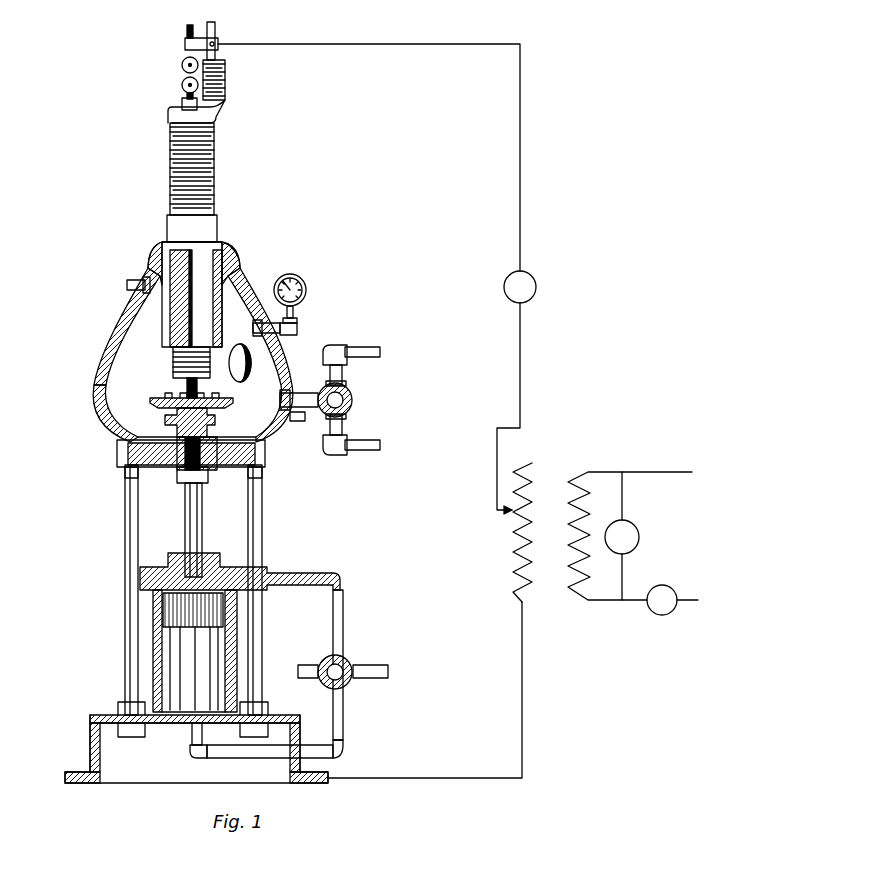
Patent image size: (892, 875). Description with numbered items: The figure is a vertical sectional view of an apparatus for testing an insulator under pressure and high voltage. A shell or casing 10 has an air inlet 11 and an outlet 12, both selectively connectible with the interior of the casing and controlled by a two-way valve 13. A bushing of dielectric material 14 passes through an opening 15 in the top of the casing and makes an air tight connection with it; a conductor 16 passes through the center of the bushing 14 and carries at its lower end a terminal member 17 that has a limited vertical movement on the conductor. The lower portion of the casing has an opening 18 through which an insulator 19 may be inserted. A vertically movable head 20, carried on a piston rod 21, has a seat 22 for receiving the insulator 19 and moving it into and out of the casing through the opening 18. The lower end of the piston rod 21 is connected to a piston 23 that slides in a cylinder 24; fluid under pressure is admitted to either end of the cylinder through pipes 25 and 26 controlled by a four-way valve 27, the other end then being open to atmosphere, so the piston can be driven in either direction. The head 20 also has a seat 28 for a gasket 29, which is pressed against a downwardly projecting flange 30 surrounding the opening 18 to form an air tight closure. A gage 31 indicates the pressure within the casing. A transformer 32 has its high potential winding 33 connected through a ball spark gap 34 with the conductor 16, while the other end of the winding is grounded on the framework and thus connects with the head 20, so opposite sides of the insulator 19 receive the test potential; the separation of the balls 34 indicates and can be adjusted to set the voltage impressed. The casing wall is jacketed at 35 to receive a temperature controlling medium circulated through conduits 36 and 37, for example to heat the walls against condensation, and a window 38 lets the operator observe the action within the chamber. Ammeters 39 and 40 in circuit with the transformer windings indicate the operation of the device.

The shell or casing 10 is at (287, 362).
The air inlet 11 is at (372, 348).
The outlet 12 is at (365, 445).
The two-way valve 13 is at (355, 395).
The bushing of dielectric material 14 is at (200, 232).
The opening 15 is at (240, 283).
The conductor 16 is at (188, 383).
The terminal member 17 is at (188, 393).
The opening 18 is at (96, 418).
The insulator 19 is at (185, 403).
The vertically movable head 20 is at (170, 465).
The piston rod 21 is at (200, 527).
The seat 22 is at (233, 423).
The piston 23 is at (193, 610).
The cylinder 24 is at (155, 662).
The pipe 25 is at (300, 750).
The pipe 26 is at (290, 577).
The four-way valve 27 is at (348, 660).
The seat 28 is at (255, 483).
The gasket 29 is at (280, 460).
The downwardly projecting flange 30 is at (130, 445).
The gage 31 is at (300, 280).
The transformer 32 is at (550, 600).
The high potential winding 33 is at (515, 482).
The ball spark gap 34 is at (181, 84).
The jacket 35 is at (122, 327).
The conduit 36 is at (150, 282).
The conduit 37 is at (298, 420).
The window 38 is at (248, 365).
The ammeter 39 is at (672, 612).
The ammeter 40 is at (536, 288).